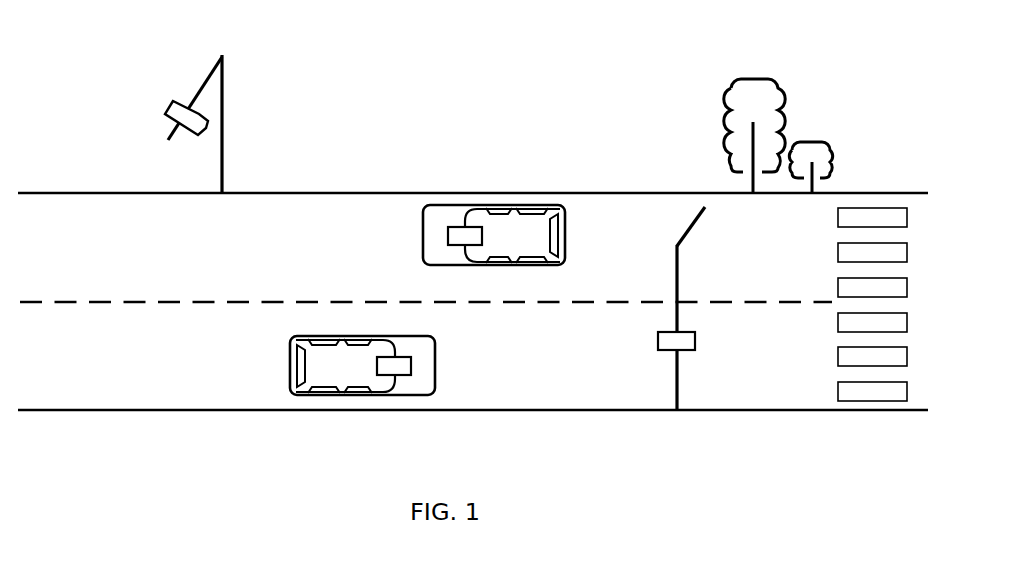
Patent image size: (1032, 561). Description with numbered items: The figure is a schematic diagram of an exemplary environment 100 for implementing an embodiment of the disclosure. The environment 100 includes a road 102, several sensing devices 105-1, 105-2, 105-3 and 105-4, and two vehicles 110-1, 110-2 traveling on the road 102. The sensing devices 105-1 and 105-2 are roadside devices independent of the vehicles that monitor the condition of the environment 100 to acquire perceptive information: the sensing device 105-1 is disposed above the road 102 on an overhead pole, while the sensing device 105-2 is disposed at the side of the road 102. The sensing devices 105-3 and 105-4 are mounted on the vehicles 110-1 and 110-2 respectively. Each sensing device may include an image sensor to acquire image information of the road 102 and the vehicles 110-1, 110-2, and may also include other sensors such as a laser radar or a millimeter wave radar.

The environment 100 is at (492, 60).
The road 102 is at (75, 236).
The sensing device 105-1 is at (172, 110).
The sensing device 105-2 is at (695, 342).
The sensing device 105-3 is at (410, 366).
The sensing device 105-4 is at (460, 226).
The vehicle 110-1 is at (436, 362).
The vehicle 110-2 is at (423, 235).